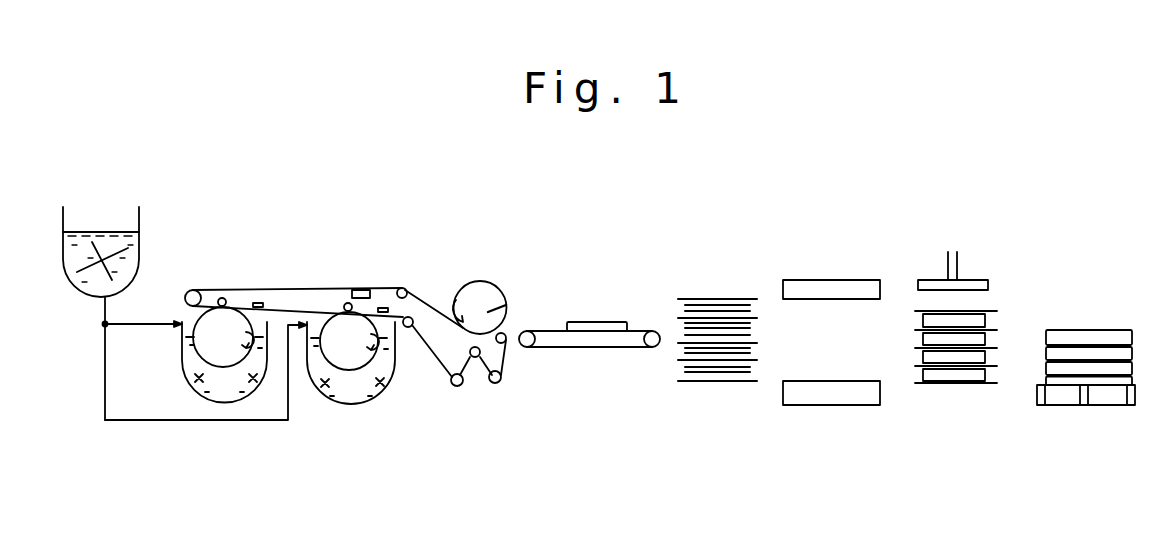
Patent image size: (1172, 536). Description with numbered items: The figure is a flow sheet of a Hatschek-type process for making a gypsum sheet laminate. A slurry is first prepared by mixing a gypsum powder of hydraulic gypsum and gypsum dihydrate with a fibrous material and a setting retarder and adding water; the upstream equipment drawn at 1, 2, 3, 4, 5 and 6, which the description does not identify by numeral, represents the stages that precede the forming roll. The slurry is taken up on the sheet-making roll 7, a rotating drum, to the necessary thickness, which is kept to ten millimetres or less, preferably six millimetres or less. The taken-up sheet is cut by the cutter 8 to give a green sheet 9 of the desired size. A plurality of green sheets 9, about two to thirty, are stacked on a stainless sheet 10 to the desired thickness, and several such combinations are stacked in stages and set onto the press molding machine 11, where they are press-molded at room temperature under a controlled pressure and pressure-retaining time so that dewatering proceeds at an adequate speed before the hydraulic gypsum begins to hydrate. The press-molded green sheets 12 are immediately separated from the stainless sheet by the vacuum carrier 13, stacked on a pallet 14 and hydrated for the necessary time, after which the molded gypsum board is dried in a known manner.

The coating liquid supply tank with stirrer 1 is at (113, 229).
The coating bath 2 is at (392, 386).
The coating roller 3 is at (348, 353).
The bath heater 4 is at (330, 391).
The conveyor belt 5 is at (233, 290).
The sheet on belt 6 is at (360, 289).
The sheet-making roll 7 is at (482, 281).
The cutter 8 is at (493, 312).
The green sheet 9 is at (593, 322).
The stainless sheet 10 is at (717, 383).
The press molding machine 11 is at (808, 281).
The press-molded green sheets 12 is at (962, 377).
The vacuum carrier 13 is at (963, 268).
The pallet 14 is at (1065, 397).